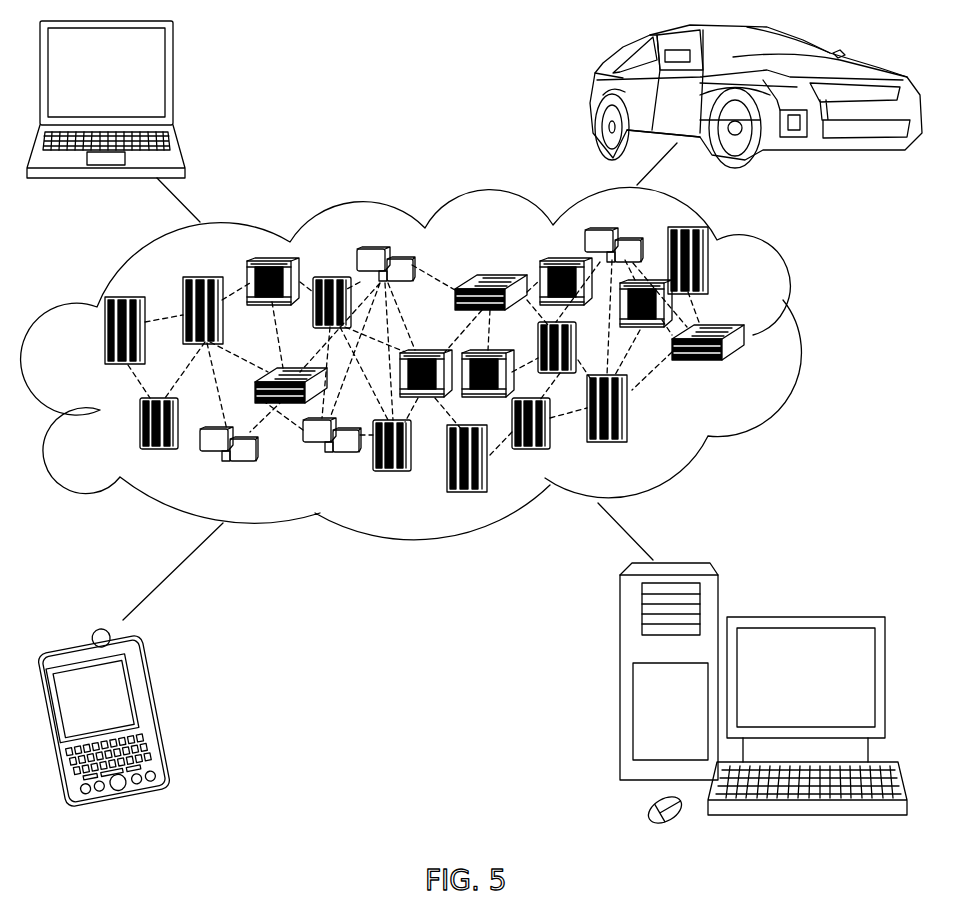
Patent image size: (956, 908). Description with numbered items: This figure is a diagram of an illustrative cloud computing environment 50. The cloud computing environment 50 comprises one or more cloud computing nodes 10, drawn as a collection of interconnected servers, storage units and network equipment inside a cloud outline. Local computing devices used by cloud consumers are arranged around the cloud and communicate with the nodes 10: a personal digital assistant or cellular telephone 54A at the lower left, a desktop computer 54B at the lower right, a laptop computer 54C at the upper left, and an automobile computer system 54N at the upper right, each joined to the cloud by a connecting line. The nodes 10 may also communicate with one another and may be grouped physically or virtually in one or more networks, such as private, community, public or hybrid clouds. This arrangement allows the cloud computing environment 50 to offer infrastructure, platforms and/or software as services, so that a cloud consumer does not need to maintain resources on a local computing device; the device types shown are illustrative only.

The laptop computer 54C is at (173, 80).
The automobile computer system 54N is at (592, 97).
The cloud computing environment 50 is at (805, 342).
The cloud computing node 10 is at (747, 368).
The personal digital assistant or cellular telephone 54A is at (162, 708).
The desktop computer 54B is at (803, 612).